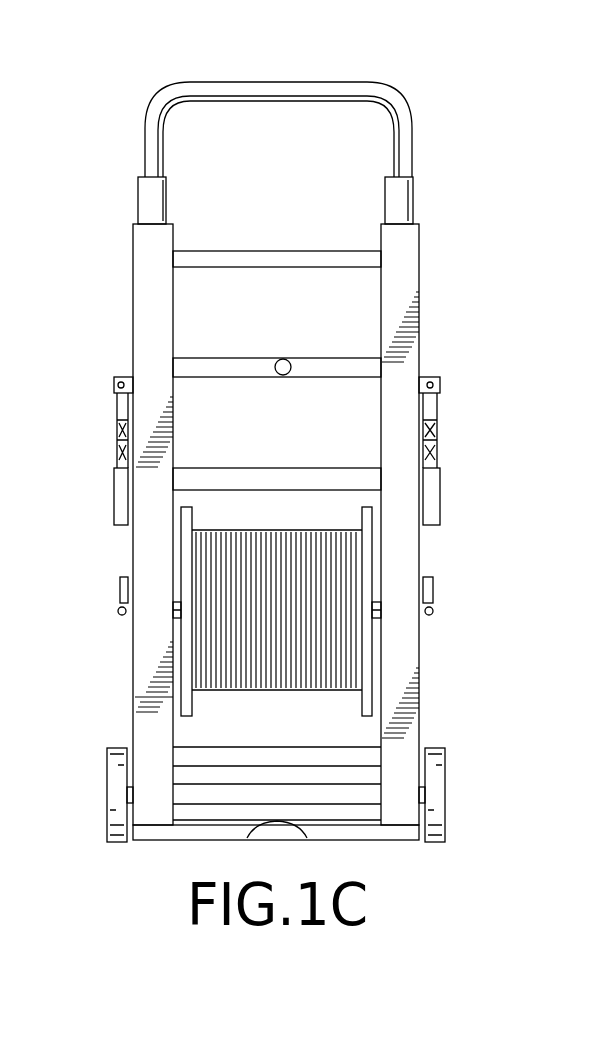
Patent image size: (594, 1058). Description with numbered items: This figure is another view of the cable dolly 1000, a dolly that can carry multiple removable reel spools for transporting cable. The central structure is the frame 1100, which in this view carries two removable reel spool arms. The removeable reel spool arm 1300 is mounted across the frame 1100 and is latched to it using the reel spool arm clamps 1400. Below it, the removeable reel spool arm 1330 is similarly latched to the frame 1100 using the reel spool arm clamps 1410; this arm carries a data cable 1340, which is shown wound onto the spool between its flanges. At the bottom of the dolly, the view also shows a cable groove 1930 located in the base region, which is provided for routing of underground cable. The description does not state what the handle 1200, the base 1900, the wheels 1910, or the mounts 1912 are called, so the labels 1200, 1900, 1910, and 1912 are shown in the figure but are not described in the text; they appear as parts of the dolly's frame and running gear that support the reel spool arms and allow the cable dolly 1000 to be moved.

The cable dolly 1000 is at (20, 101).
The frame 1100 is at (417, 264).
The handle 1200 is at (345, 88).
The removeable reel spool arm 1300 is at (230, 357).
The removeable reel spool arm 1330 is at (378, 608).
The data cable 1340 is at (305, 638).
The reel spool arm clamps 1400 is at (437, 430).
The reel spool arm clamps 1410 is at (436, 580).
The base 1900 is at (20, 774).
The wheel 1910 is at (25, 809).
The axle mount 1912 is at (31, 727).
The cable groove 1930 is at (277, 832).